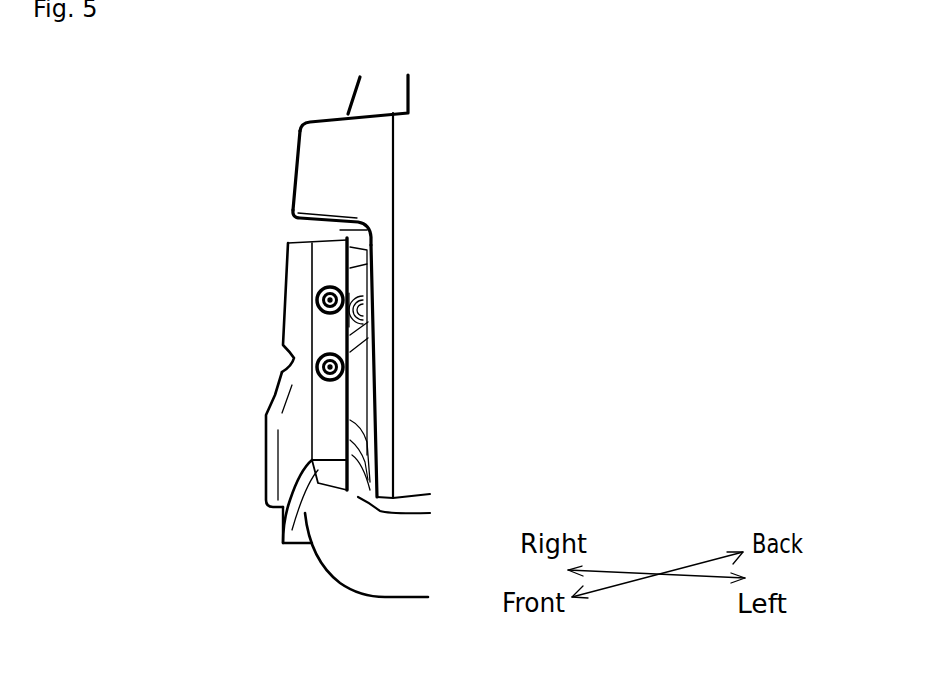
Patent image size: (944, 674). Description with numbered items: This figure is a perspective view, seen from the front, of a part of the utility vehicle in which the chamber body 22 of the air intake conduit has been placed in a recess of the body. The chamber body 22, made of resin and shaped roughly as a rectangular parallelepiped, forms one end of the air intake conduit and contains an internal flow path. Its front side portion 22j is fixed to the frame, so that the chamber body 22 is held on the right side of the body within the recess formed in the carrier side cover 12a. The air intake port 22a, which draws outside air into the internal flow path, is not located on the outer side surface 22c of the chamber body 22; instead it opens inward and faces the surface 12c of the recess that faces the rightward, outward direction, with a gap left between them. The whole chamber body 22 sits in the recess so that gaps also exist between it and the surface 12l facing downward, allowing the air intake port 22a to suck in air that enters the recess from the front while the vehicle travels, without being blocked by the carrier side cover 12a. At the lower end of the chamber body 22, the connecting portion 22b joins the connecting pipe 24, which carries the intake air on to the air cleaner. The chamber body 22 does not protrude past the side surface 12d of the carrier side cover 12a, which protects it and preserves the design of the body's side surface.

The carrier side cover 12a is at (307, 127).
The side surface of the carrier side cover 12d is at (297, 178).
The surface facing a downward direction 12l is at (310, 226).
The surface facing a rightward direction 12c is at (368, 383).
The chamber body 22 is at (292, 288).
The front side portion 22j is at (326, 326).
The air intake port 22a is at (350, 305).
The outer side surface 22c is at (268, 393).
The connecting portion 22b is at (380, 465).
The connecting pipe 24 is at (397, 565).